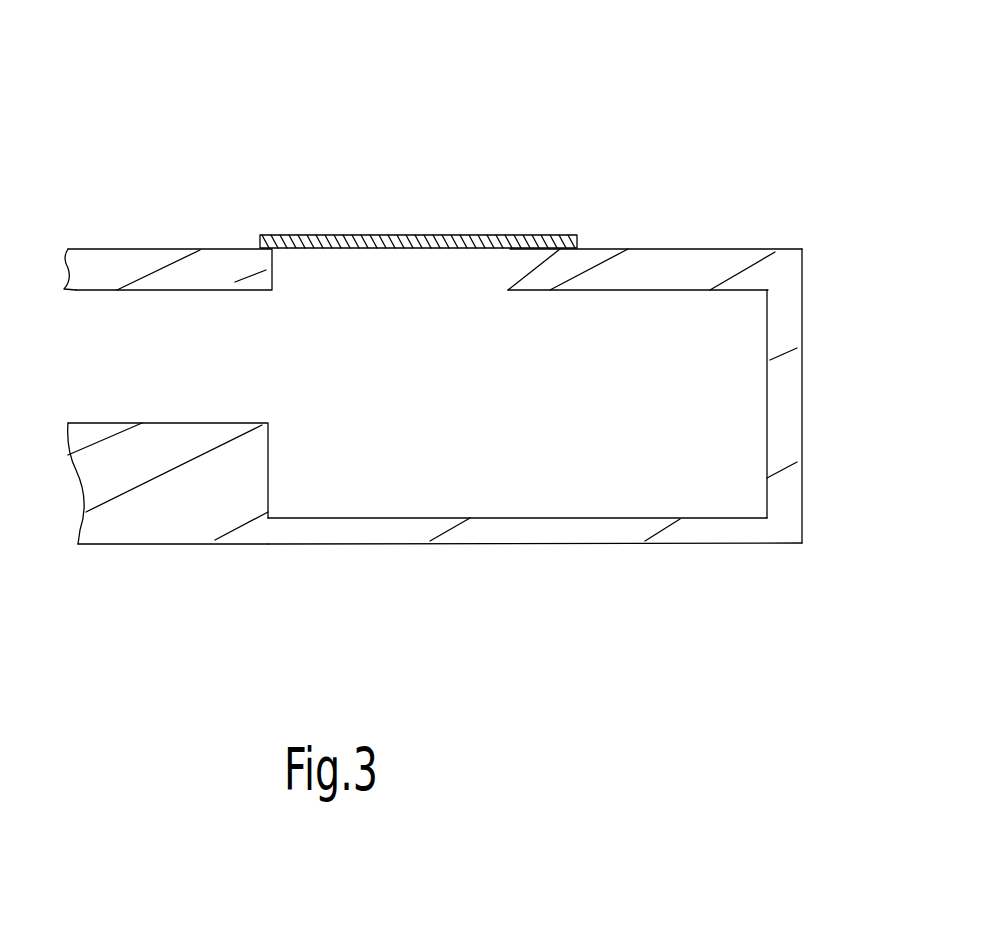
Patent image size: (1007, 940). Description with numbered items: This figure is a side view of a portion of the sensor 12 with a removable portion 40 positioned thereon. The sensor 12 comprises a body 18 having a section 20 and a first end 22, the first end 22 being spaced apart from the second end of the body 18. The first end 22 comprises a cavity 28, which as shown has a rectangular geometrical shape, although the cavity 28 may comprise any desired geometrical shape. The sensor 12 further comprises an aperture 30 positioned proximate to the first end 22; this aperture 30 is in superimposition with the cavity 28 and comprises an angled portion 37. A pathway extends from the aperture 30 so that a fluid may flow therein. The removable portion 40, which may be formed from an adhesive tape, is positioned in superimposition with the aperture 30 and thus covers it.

The sensor 12 is at (97, 171).
The body 18 is at (202, 262).
The section 20 is at (86, 430).
The aperture 30 is at (482, 104).
The removable portion 40 is at (444, 237).
The first end 22 is at (793, 192).
The angled portion 37 is at (524, 274).
The cavity 28 is at (743, 421).